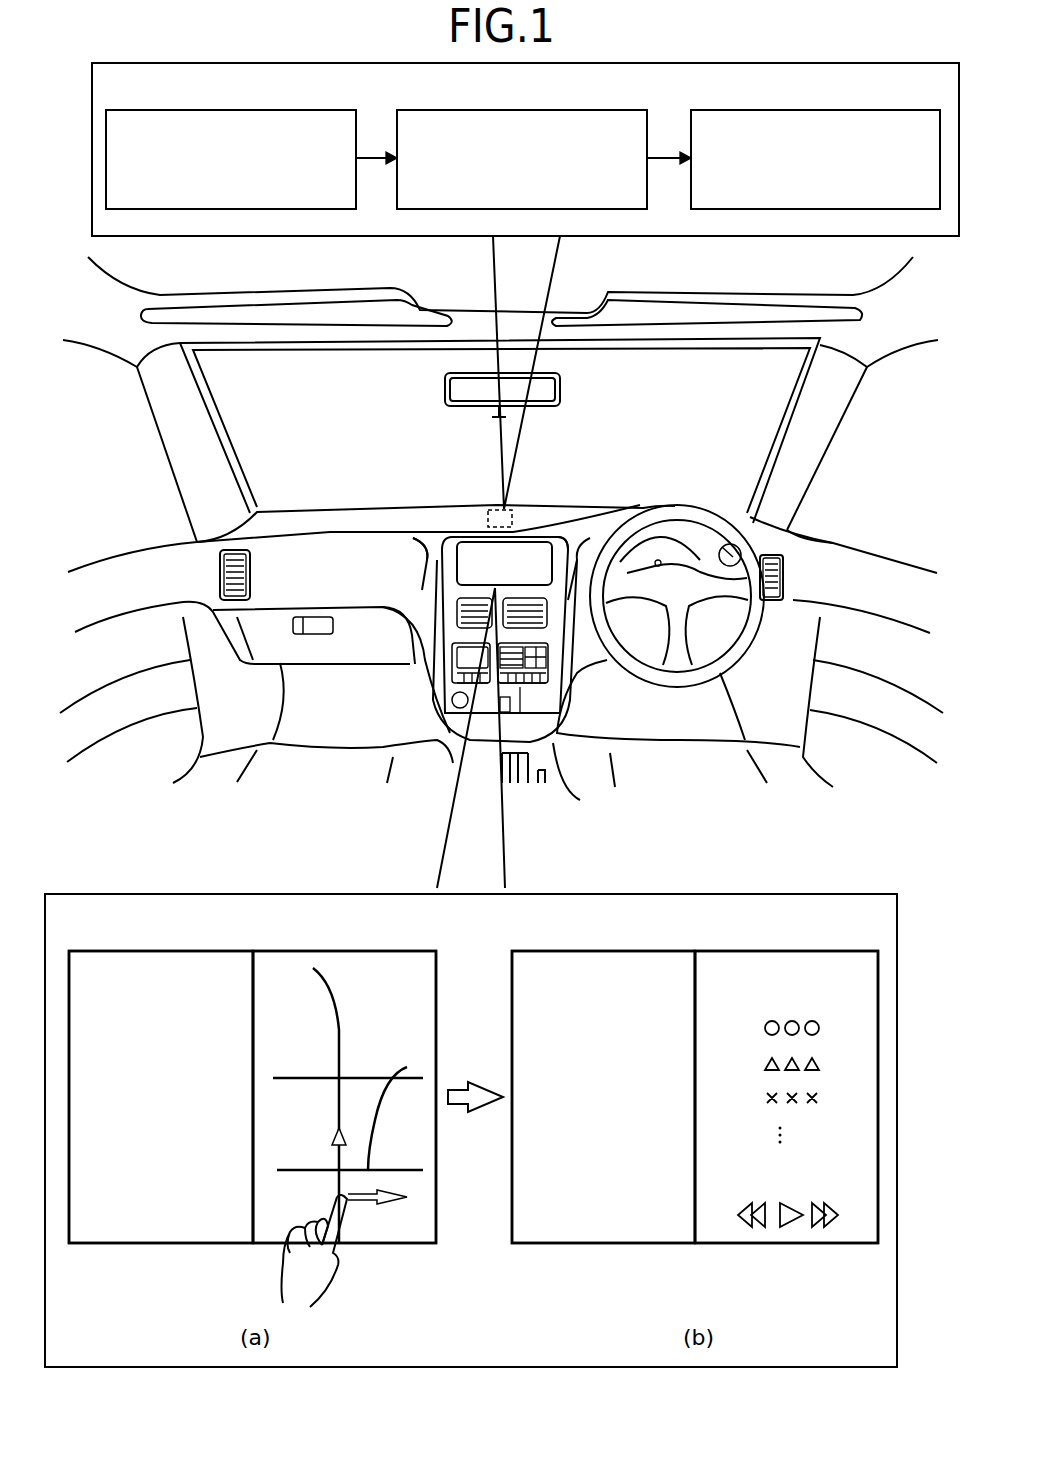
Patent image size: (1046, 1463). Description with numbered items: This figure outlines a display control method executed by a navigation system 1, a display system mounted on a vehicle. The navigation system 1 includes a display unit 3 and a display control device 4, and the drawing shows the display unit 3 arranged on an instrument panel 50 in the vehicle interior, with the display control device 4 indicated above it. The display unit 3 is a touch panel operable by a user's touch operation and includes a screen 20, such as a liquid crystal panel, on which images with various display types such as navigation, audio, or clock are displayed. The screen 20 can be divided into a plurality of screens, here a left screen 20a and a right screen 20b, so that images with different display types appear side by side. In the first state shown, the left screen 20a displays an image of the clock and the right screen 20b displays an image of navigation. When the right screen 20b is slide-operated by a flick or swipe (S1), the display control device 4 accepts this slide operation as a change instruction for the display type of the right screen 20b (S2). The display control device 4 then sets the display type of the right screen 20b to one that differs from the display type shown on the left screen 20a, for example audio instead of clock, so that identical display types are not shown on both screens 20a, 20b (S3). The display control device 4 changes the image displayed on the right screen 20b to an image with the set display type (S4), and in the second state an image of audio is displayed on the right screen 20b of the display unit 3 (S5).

The navigation system 1 is at (540, 536).
The display unit 3 is at (533, 557).
The display control device 4 is at (495, 500).
The screen 20 is at (502, 576).
The left screen 20a is at (176, 951).
The right screen 20b is at (354, 951).
The instrument panel 50 is at (437, 557).
The slide operation step S1 is at (345, 1257).
The change instruction accepting step S2 is at (296, 110).
The different display type setting step S3 is at (591, 110).
The image changing step S4 is at (886, 110).
The audio image display step S5 is at (778, 1245).